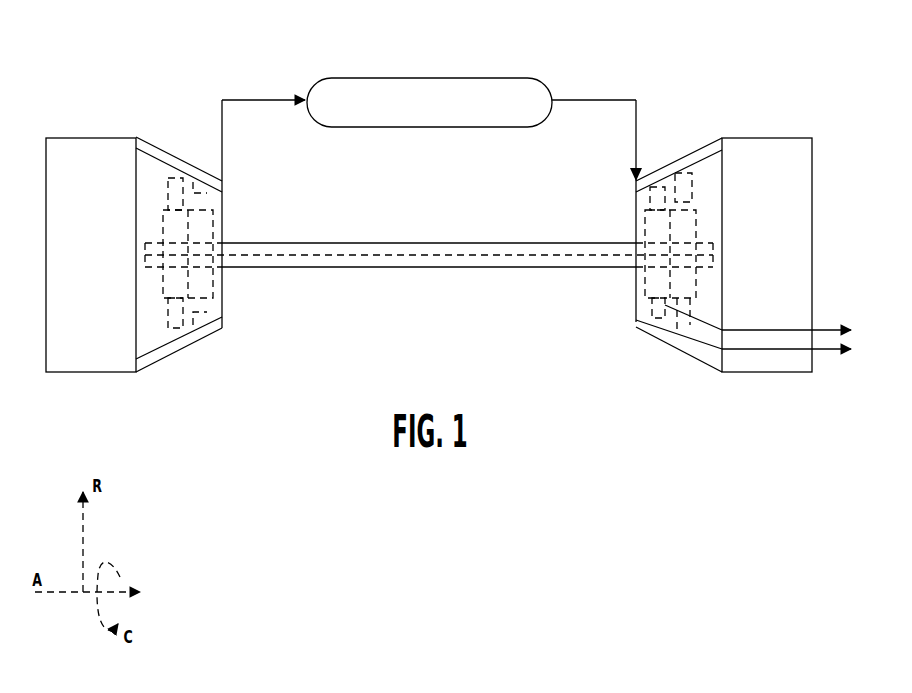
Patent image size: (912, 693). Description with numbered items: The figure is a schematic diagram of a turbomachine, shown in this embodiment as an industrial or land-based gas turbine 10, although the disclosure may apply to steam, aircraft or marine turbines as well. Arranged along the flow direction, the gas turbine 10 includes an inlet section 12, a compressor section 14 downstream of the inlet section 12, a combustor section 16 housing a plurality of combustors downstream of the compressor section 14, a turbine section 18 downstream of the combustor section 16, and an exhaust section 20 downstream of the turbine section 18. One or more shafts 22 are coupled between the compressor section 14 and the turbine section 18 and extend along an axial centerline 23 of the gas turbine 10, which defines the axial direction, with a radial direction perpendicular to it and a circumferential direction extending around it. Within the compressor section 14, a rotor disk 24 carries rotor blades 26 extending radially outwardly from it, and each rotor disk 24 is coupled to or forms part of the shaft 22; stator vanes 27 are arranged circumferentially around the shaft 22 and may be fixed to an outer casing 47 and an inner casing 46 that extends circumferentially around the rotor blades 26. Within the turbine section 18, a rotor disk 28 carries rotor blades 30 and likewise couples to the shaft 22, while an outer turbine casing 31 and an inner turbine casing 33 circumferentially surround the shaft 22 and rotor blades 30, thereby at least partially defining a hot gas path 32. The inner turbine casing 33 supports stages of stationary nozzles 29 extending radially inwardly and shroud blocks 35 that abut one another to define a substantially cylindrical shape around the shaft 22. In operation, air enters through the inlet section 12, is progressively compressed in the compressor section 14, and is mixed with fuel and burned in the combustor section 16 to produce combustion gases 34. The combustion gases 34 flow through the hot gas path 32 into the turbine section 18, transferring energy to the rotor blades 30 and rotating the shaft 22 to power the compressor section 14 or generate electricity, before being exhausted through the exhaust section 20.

The gas turbine 10 is at (268, 39).
The inlet section 12 is at (65, 138).
The compressor section 14 is at (170, 153).
The combustor section 16 is at (487, 78).
The turbine section 18 is at (707, 142).
The exhaust section 20 is at (788, 138).
The shaft 22 is at (383, 267).
The axial centerline 23 is at (513, 268).
The rotor disk 24 is at (163, 225).
The rotor blade 26 is at (168, 187).
The stator vane 27 is at (222, 195).
The rotor disk 28 is at (645, 215).
The stationary nozzle 29 is at (692, 185).
The rotor blade 30 is at (655, 170).
The outer turbine casing 31 is at (702, 362).
The hot gas path 32 is at (702, 309).
The inner turbine casing 33 is at (636, 325).
The combustion gases 34 is at (583, 101).
The shroud block 35 is at (667, 342).
The inner casing 46 is at (158, 345).
The outer casing 47 is at (147, 145).